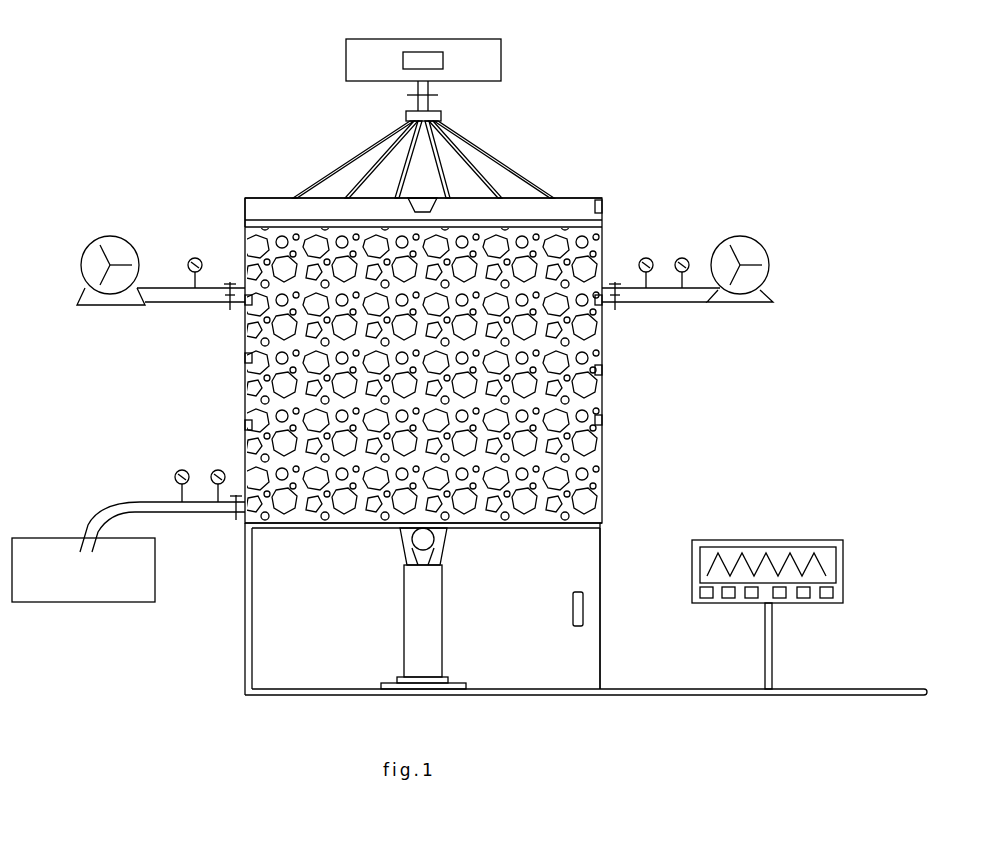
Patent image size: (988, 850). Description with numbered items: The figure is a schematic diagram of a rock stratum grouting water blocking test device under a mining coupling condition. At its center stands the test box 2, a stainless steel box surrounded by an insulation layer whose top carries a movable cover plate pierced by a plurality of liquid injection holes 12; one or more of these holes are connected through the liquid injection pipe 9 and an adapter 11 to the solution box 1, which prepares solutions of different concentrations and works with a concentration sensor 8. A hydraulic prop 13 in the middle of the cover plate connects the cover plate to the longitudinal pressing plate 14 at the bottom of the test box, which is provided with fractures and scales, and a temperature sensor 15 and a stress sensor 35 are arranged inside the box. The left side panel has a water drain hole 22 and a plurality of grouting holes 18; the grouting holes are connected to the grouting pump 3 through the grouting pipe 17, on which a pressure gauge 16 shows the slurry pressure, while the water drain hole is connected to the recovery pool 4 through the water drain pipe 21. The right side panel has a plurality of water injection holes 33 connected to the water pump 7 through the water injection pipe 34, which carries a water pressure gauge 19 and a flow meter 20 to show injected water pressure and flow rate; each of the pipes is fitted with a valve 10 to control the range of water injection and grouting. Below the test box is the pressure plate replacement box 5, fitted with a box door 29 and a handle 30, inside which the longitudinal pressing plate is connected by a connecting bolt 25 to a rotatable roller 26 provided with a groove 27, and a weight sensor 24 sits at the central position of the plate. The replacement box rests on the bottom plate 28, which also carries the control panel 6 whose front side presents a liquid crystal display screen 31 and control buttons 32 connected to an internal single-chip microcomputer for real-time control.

The solution box 1 is at (447, 40).
The test box 2 is at (431, 320).
The grouting pump 3 is at (105, 258).
The recovery pool 4 is at (83, 556).
The pressure plate replacement box 5 is at (450, 584).
The control panel 6 is at (786, 592).
The water pump 7 is at (762, 238).
The concentration sensor 8 is at (441, 37).
The liquid injection pipe 9 is at (444, 156).
The valve 10 is at (365, 105).
The adapter 11 is at (446, 103).
The liquid injection hole 12 is at (420, 160).
The hydraulic prop 13 is at (506, 404).
The longitudinal pressing plate 14 is at (412, 417).
The temperature sensor 15 is at (239, 196).
The pressure gauge 16 is at (185, 251).
The grouting pipe 17 is at (177, 251).
The grouting hole 18 is at (246, 300).
The water pressure gauge 19 is at (431, 352).
The flow meter 20 is at (433, 352).
The water drain pipe 21 is at (162, 509).
The water drain hole 22 is at (220, 608).
The weight sensor 24 is at (401, 546).
The connecting bolt 25 is at (386, 566).
The rotatable roller 26 is at (441, 544).
The groove 27 is at (456, 566).
The bottom plate 28 is at (586, 648).
The box door 29 is at (627, 603).
The handle 30 is at (604, 594).
The liquid crystal display screen 31 is at (787, 559).
The control button 32 is at (789, 602).
The water injection hole 33 is at (602, 300).
The water injection pipe 34 is at (661, 310).
The stress sensor 35 is at (625, 191).